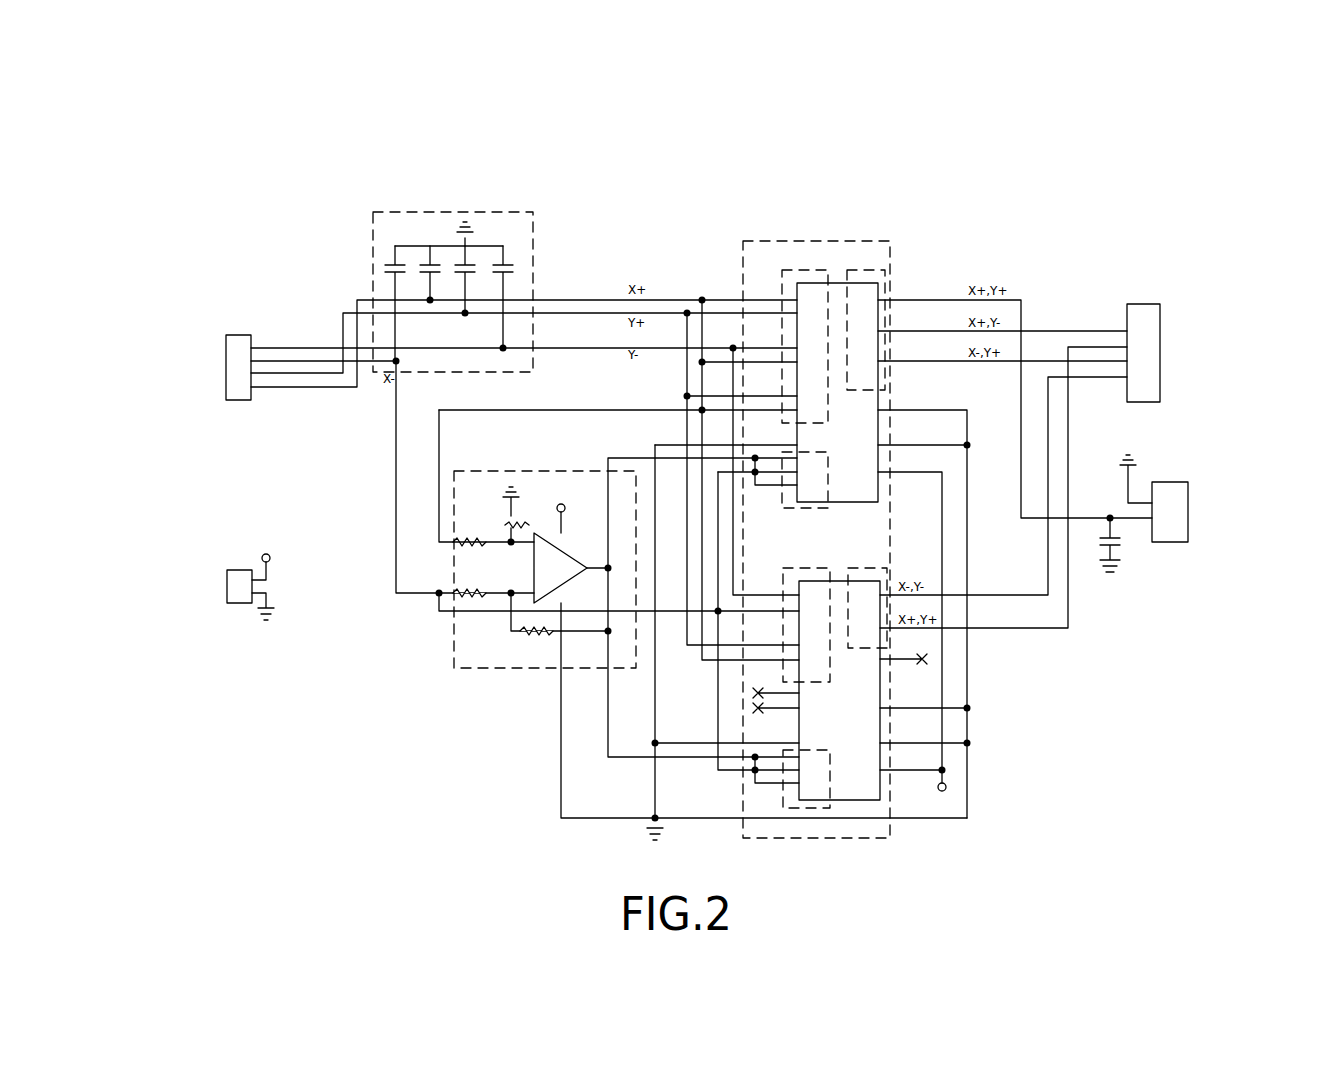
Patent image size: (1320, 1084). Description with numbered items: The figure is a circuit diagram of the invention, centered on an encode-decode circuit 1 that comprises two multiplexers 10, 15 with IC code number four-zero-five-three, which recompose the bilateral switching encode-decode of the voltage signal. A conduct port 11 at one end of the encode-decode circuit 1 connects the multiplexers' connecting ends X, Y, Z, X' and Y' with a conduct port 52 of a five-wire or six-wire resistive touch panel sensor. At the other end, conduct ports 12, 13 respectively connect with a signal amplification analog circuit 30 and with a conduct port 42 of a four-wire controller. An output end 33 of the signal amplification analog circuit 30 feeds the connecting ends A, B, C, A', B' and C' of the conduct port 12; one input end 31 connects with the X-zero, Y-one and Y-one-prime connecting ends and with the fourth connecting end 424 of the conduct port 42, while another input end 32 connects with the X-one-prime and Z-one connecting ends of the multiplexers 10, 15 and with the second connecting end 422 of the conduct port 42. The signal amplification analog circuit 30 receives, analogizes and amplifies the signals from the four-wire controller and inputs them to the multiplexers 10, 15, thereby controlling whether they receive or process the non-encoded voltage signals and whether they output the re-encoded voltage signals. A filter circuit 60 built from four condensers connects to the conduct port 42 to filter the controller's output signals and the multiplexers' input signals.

The encode-decode circuit 1 is at (767, 238).
The multiplexer 10 is at (837, 293).
The conduct port 11 is at (865, 270).
The conduct port 12 is at (783, 483).
The conduct port 13 is at (807, 267).
The multiplexer 15 is at (855, 790).
The signal amplification analog circuit 30 is at (453, 640).
The input end 31 is at (508, 543).
The input end 32 is at (511, 593).
The output end 33 is at (606, 572).
The conduct port 42 is at (237, 382).
The second connecting end 422 is at (252, 348).
The fourth connecting end 424 is at (252, 388).
The conduct port 52 is at (1155, 343).
The filter circuit 60 is at (457, 212).